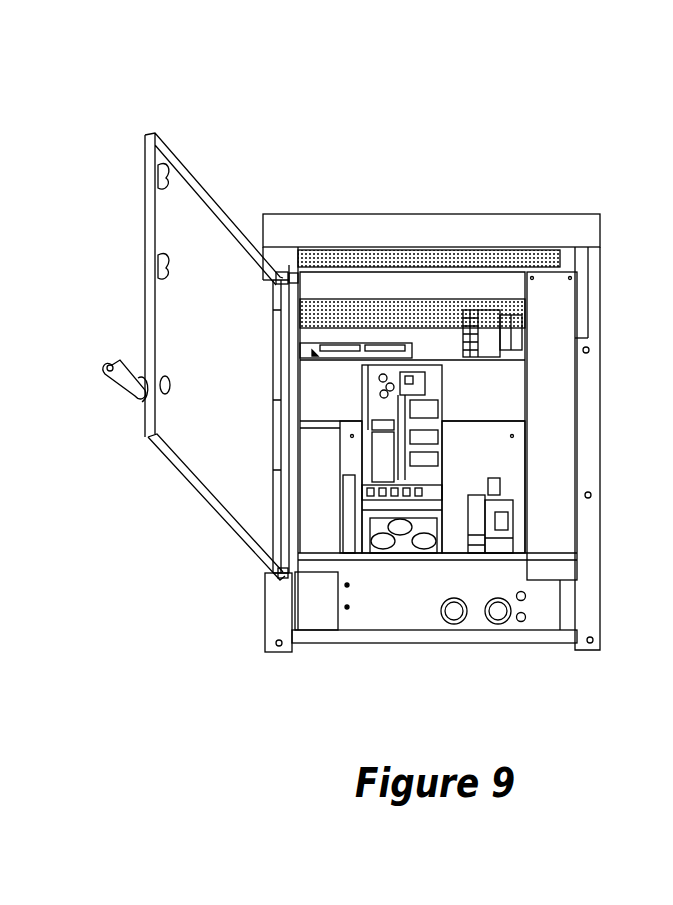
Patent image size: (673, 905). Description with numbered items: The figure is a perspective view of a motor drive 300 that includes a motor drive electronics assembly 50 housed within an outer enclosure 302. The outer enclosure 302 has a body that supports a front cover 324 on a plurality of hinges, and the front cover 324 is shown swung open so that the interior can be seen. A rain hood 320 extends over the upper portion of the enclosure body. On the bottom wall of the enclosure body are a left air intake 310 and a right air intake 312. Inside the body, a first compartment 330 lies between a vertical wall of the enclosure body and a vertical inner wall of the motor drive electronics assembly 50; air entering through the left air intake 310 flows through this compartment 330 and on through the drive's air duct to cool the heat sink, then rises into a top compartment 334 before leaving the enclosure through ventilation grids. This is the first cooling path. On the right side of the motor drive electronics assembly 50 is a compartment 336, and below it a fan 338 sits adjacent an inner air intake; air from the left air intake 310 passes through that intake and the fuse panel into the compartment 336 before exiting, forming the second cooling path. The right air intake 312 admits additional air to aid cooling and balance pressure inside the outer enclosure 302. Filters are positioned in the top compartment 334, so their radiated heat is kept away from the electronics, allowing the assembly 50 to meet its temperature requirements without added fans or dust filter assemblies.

The motor drive 300 is at (222, 106).
The outer enclosure 302 is at (312, 174).
The rain hood 320 is at (521, 220).
The front cover 324 is at (214, 460).
The left air intake 310 is at (312, 626).
The right air intake 312 is at (553, 622).
The first compartment 330 is at (328, 485).
The top compartment 334 is at (445, 320).
The compartment 336 is at (503, 455).
The fan 338 is at (346, 500).
The motor drive electronics assembly 50 is at (455, 428).